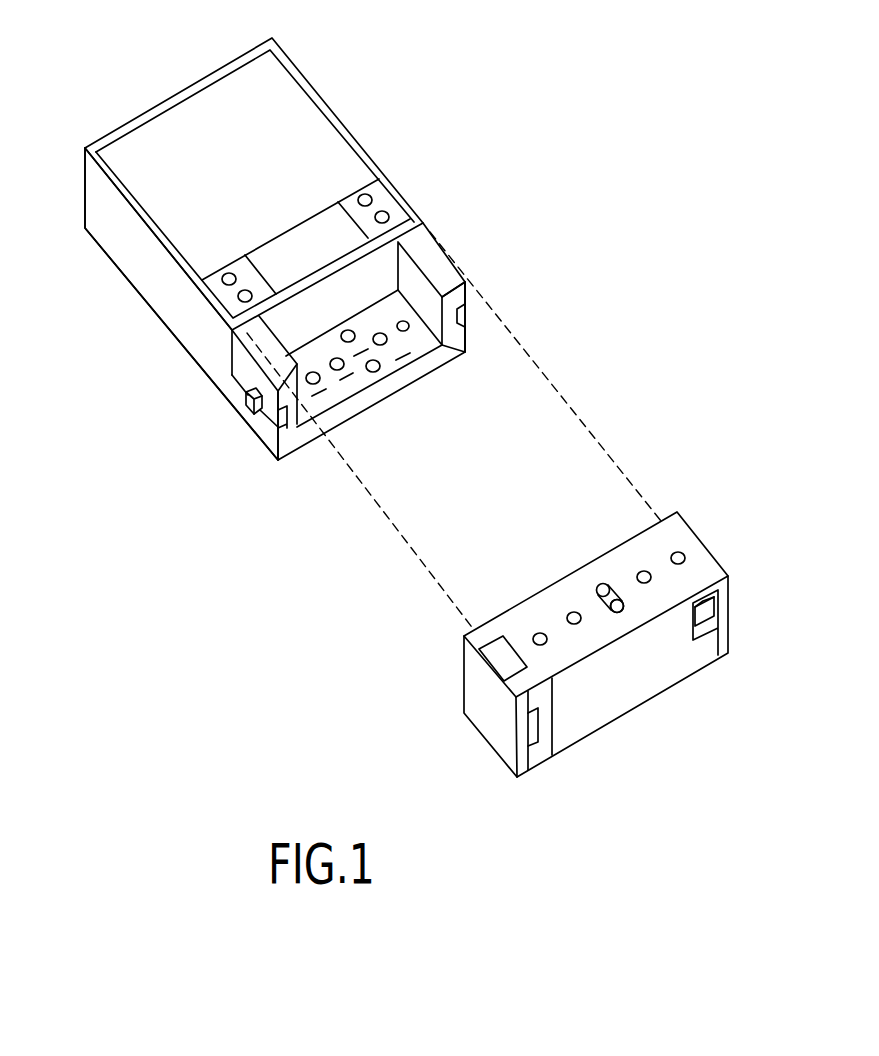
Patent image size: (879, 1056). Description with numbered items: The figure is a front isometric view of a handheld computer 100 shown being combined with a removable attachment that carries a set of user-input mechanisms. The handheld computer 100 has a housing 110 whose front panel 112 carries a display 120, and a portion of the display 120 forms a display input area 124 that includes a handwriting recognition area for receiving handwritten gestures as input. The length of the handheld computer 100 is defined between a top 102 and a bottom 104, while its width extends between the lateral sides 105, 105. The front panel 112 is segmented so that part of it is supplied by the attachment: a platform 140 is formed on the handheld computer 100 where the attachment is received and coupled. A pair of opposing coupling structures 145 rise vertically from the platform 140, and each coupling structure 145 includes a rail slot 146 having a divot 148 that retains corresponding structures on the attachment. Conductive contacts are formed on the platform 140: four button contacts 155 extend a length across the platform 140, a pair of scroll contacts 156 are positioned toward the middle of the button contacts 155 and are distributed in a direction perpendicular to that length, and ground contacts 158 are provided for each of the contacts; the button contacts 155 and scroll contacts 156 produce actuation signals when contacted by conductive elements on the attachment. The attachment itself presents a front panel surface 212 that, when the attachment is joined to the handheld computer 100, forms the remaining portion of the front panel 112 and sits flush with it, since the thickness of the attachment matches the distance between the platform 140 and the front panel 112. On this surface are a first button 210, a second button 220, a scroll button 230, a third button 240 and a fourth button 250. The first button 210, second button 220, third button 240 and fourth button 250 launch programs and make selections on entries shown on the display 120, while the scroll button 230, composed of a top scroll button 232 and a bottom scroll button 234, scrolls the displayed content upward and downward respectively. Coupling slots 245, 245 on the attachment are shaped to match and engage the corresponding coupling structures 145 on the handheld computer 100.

The handheld computer 100 is at (158, 63).
The top 102 is at (117, 130).
The bottom 104 is at (461, 337).
The lateral sides 105 is at (326, 100).
The housing 110 is at (305, 60).
The front panel 112 is at (352, 142).
The display 120 is at (238, 165).
The display input area 124 is at (295, 240).
The platform 140 is at (396, 348).
The coupling structures 145 is at (437, 247).
The rail slot 146 is at (462, 318).
The divot 148 is at (248, 413).
The button contacts 155 is at (349, 343).
The scroll contacts 156 is at (383, 347).
The ground contacts 158 is at (452, 350).
The first button 210 is at (537, 633).
The front panel surface 212 is at (581, 643).
The second button 220 is at (571, 612).
The scroll button 230 is at (598, 595).
The top scroll button 232 is at (694, 640).
The bottom scroll button 234 is at (622, 588).
The third button 240 is at (640, 576).
The coupling slots 245 is at (705, 655).
The fourth button 250 is at (673, 553).